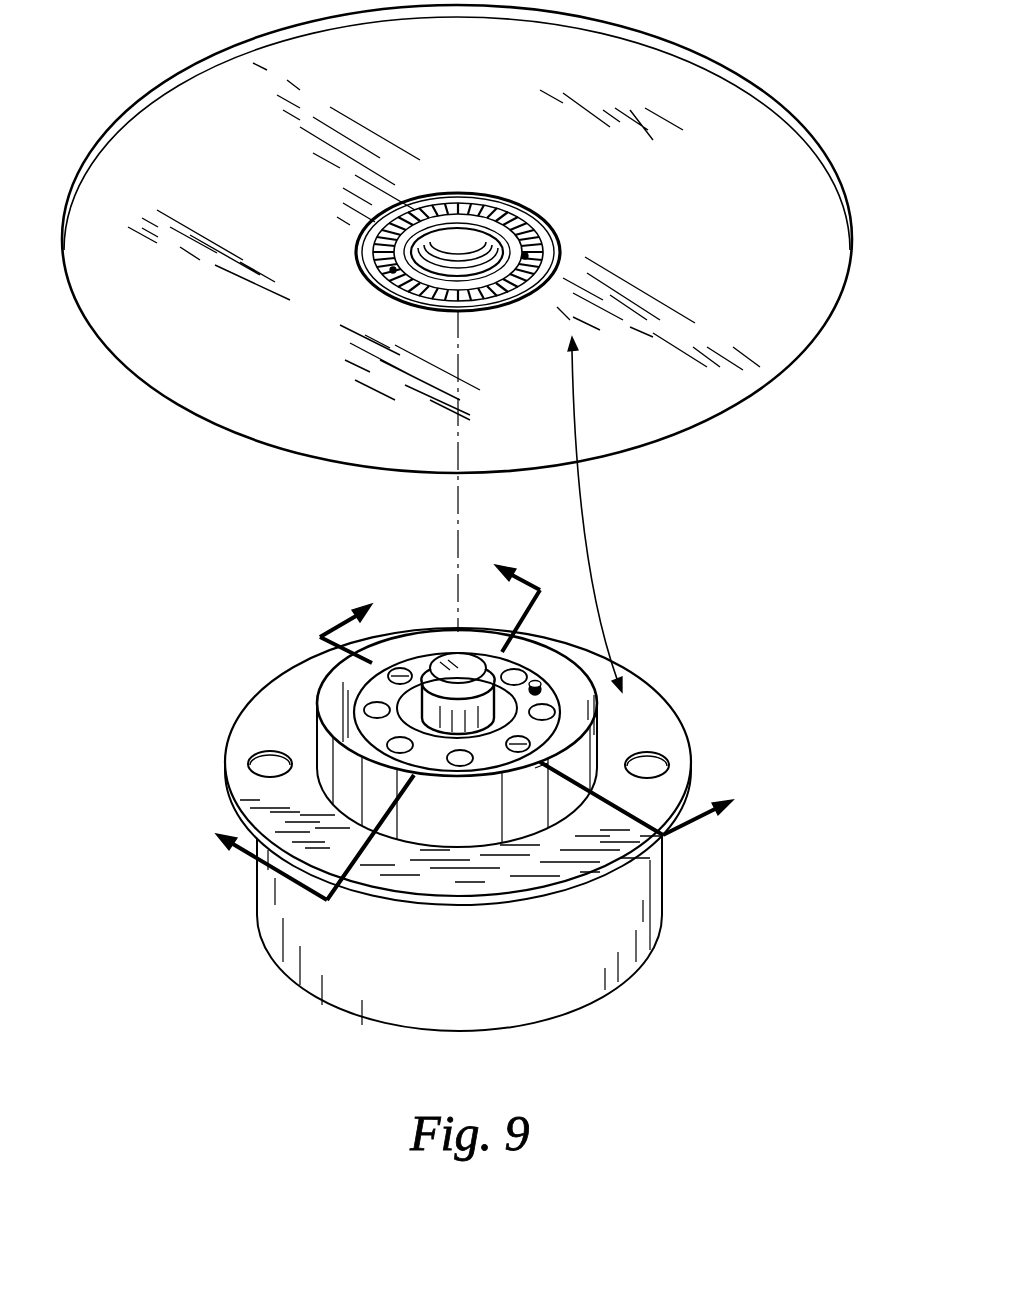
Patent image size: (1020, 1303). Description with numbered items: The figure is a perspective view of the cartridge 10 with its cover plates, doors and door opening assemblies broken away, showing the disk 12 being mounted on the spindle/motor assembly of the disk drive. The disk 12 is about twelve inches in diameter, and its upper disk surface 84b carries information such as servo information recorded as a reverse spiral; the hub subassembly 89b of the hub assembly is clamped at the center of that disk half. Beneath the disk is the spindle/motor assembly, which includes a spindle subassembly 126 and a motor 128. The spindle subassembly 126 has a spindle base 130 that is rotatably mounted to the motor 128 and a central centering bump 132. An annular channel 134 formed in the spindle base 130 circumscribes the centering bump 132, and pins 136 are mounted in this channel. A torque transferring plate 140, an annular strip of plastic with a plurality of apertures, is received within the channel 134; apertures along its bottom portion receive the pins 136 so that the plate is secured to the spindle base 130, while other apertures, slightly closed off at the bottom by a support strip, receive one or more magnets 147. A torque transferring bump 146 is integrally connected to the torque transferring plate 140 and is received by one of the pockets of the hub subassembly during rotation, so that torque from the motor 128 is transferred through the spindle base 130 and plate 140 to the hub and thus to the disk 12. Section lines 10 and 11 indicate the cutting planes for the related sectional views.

The cartridge 10 is at (537, 711).
The section line 11- 11 is at (361, 723).
The disk 12 is at (699, 445).
The disk surface 84b is at (745, 293).
The hub subassembly 89b is at (559, 206).
The spindle subassembly 126 is at (710, 775).
The motor 128 is at (682, 907).
The spindle base 130 is at (427, 822).
The centering bump 132 is at (452, 654).
The annular channel 134 is at (412, 720).
The pins 136 is at (492, 668).
The torque transferring plate 140 is at (548, 763).
The torque transferring bump 146 is at (579, 725).
The magnets 147 is at (385, 632).